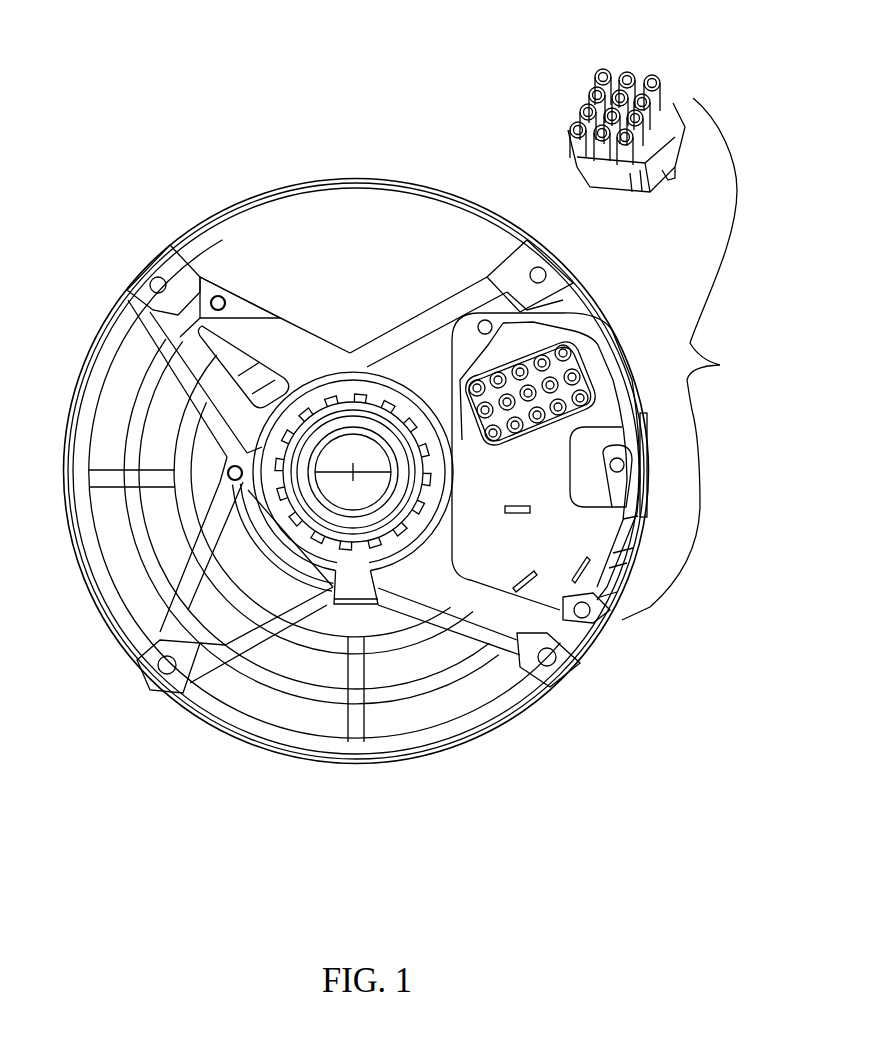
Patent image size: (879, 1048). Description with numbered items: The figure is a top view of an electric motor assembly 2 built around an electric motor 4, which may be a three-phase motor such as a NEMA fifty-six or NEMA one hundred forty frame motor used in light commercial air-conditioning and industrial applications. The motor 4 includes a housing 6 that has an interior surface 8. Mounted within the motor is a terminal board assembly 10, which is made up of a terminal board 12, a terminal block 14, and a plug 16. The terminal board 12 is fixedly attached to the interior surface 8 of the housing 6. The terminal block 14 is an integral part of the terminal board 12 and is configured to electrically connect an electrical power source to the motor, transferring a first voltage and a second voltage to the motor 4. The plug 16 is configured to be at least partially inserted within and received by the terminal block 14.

The electric motor assembly 2 is at (277, 800).
The electric motor 4 is at (135, 272).
The housing 6 is at (88, 598).
The interior surface 8 is at (603, 346).
The terminal board assembly 10 is at (692, 359).
The terminal board 12 is at (550, 594).
The terminal block 14 is at (545, 350).
The plug 16 is at (648, 56).